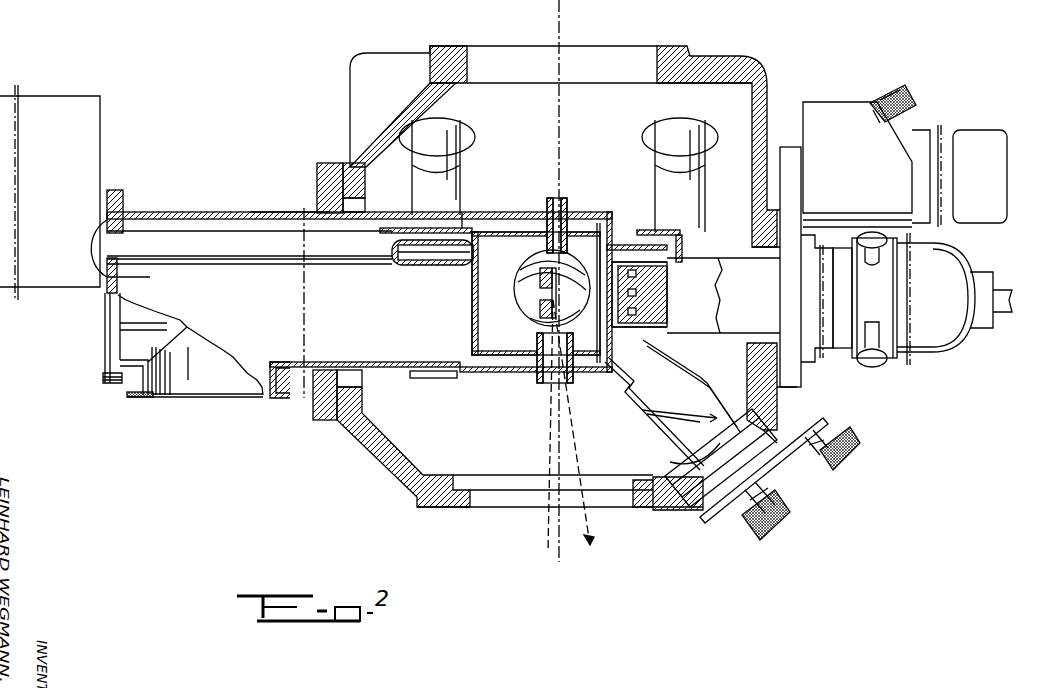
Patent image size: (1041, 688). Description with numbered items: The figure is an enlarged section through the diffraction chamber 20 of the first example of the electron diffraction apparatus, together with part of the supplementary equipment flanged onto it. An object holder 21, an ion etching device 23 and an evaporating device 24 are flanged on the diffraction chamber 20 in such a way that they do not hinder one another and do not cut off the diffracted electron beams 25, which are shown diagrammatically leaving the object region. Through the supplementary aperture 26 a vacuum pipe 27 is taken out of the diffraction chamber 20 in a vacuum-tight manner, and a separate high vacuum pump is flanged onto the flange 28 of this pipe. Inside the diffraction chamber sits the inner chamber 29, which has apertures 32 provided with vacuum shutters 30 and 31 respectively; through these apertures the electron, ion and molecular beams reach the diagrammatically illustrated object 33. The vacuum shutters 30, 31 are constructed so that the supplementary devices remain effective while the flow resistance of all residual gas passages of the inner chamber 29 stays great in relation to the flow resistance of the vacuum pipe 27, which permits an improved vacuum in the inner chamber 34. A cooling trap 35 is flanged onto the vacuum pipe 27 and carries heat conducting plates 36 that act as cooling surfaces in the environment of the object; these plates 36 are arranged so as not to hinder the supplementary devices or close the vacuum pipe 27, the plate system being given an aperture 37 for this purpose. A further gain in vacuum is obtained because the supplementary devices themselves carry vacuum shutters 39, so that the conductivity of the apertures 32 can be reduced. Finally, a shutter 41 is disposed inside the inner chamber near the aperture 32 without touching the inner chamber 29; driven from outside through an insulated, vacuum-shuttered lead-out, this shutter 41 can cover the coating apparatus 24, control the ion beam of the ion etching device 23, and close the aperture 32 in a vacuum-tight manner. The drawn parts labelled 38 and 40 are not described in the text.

The diffraction chamber 20 is at (762, 68).
The object holder 21 is at (537, 278).
The ion etching device 23 is at (796, 281).
The evaporating device 24 is at (732, 458).
The diffracted electron beams 25 is at (576, 524).
The supplementary aperture 26 is at (362, 212).
The vacuum pipe 27 is at (256, 213).
The flange 28 is at (197, 380).
The inner chamber 29 is at (468, 212).
The vacuum shutter 30 is at (565, 212).
The vacuum shutter 31 is at (622, 246).
The apertures 32 is at (550, 205).
The object 33 is at (556, 294).
The inner chamber 34 is at (478, 372).
The cooling trap 35 is at (215, 253).
The heat conducting plates 36 is at (492, 230).
The aperture 37 is at (472, 292).
The port 38 is at (443, 194).
The vacuum shutters 39 is at (668, 232).
The channel 40 is at (312, 403).
The shutter 41 is at (597, 243).